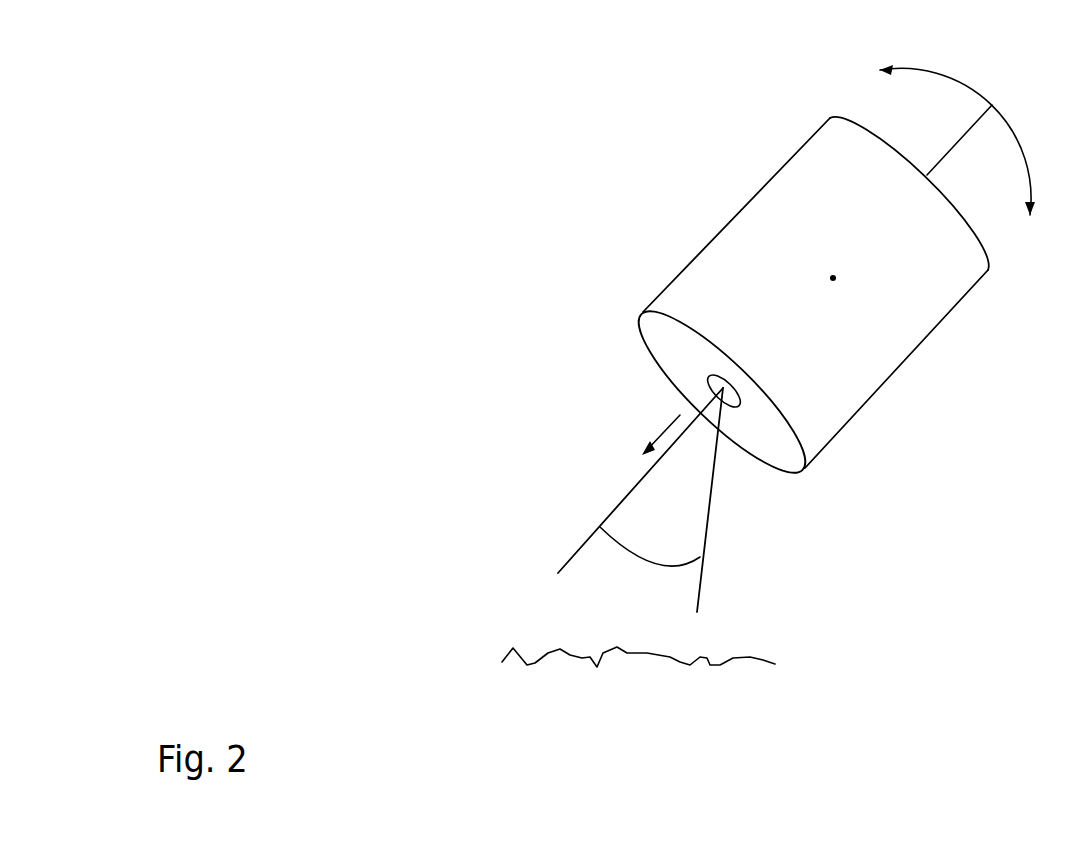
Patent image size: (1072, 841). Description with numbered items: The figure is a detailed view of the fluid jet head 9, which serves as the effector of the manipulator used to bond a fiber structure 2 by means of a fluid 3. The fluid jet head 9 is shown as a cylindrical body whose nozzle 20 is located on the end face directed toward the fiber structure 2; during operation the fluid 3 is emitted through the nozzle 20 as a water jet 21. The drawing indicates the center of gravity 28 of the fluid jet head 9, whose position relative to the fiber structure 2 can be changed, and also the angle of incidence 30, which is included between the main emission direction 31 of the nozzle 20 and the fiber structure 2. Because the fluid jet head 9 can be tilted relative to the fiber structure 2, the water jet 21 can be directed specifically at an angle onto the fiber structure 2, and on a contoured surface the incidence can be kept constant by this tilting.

The fiber structure 2 is at (682, 690).
The fluid 3 is at (553, 500).
The fluid jet head 9 is at (815, 177).
The nozzle 20 is at (730, 396).
The water jet 21 is at (623, 500).
The center of gravity 28 is at (836, 281).
The angle of incidence 30 is at (627, 558).
The main emission direction 31 is at (667, 425).